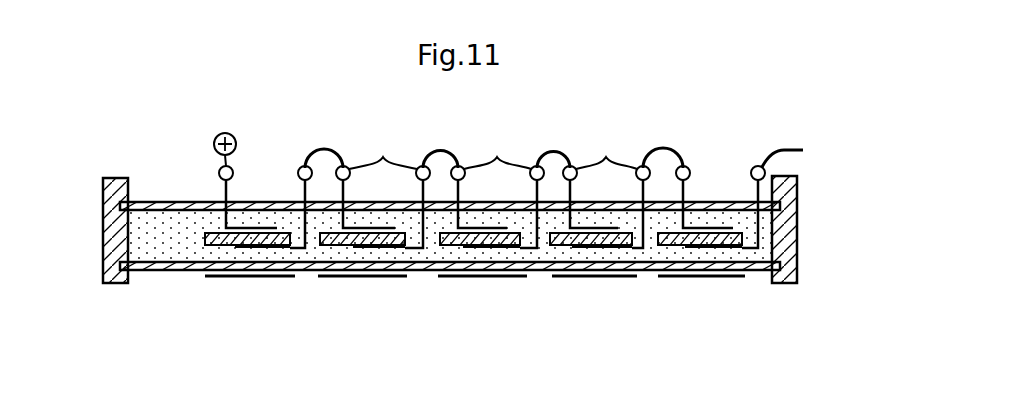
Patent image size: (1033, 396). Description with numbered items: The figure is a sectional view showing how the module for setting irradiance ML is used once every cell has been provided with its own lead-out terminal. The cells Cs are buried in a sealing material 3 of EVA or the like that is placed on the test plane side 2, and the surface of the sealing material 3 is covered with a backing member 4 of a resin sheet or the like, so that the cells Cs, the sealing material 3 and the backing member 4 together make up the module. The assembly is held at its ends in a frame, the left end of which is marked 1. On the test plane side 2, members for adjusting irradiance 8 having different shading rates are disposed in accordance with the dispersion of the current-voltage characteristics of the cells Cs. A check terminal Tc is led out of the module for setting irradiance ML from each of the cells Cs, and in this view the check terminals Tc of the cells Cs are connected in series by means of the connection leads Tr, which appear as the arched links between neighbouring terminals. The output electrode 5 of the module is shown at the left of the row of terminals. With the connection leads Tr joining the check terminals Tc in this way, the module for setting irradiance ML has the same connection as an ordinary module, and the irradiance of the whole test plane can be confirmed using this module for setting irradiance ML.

The left frame member 1 is at (112, 236).
The test plane side 2 is at (164, 271).
The sealing material 3 is at (771, 234).
The backing member 4 is at (168, 201).
The output electrode 5 is at (234, 170).
The members for adjusting irradiance 8 is at (508, 278).
The cell Cs is at (335, 245).
The connection lead Tr is at (328, 150).
The check terminal Tc is at (383, 157).
The module for setting irradiance ML is at (806, 201).